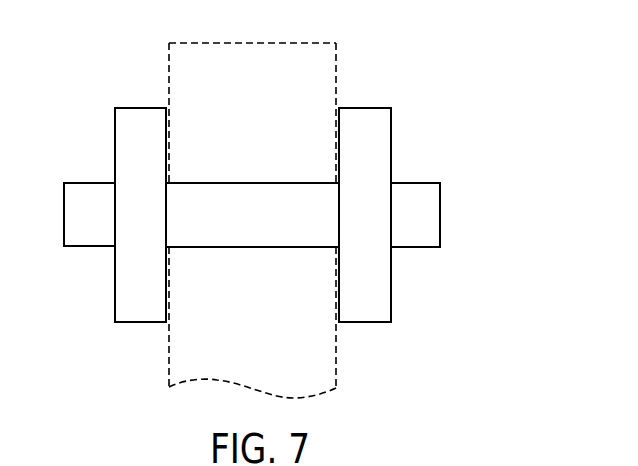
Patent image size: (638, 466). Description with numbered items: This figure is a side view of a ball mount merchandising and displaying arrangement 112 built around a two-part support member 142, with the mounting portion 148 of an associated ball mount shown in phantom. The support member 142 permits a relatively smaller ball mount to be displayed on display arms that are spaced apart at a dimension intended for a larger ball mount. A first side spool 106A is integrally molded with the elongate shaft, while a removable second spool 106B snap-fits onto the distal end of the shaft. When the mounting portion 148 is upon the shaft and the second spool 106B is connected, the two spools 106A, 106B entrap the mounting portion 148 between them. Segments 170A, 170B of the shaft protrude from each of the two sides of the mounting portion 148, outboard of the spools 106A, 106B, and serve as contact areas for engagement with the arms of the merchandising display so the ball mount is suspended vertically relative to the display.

The first side spool 106A is at (363, 120).
The second spool 106B is at (145, 123).
The ball mount merchandising and displaying arrangement 112 is at (424, 64).
The support member 142 is at (426, 276).
The mounting portion 148 is at (322, 52).
The segment of the elongate shaft 170A is at (416, 198).
The segment of the elongate shaft 170B is at (93, 193).